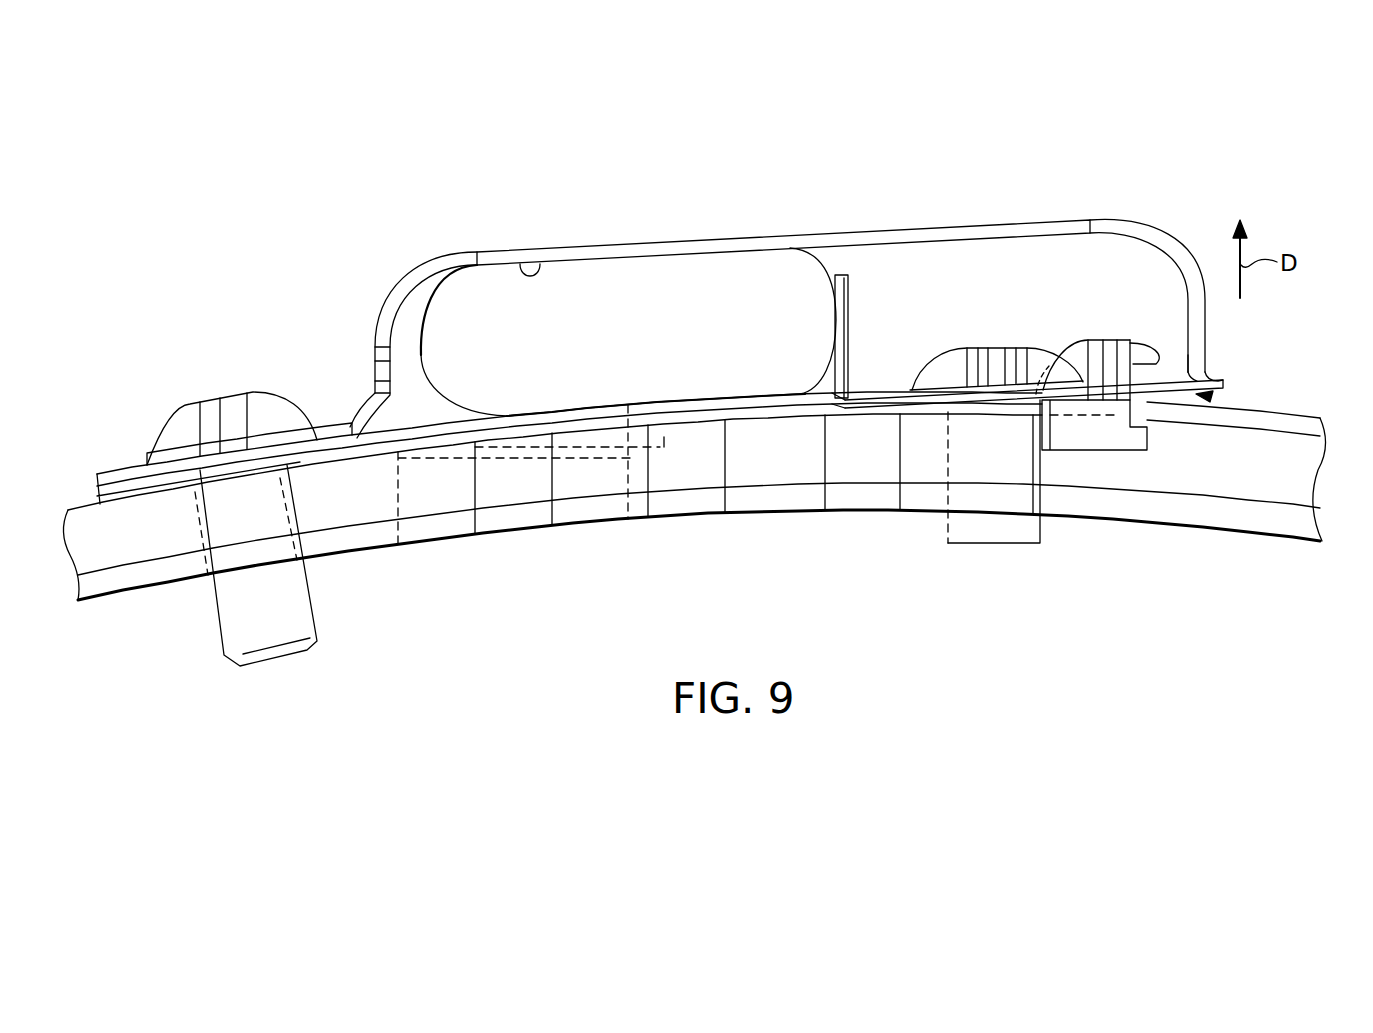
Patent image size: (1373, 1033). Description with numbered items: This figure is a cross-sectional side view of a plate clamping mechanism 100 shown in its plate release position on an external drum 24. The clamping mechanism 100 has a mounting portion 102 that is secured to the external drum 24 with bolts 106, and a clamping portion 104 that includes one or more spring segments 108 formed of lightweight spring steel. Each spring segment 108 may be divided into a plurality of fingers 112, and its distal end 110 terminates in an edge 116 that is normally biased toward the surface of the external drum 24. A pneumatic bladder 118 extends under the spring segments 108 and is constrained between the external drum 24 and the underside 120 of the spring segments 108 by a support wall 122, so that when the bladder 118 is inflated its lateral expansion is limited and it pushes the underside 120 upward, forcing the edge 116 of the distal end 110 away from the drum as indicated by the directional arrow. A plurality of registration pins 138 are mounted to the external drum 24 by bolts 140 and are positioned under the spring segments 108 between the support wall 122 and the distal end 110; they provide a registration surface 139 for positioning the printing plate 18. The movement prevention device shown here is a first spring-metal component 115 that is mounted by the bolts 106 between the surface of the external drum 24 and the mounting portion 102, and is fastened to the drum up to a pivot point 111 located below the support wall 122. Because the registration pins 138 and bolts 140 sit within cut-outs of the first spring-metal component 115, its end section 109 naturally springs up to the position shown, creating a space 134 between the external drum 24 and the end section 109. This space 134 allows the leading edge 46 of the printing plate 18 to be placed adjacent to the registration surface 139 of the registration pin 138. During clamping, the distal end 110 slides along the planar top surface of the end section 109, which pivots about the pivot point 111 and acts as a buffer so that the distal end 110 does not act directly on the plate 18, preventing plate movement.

The printing plate 18 is at (1308, 428).
The external drum 24 is at (76, 505).
The leading edge 46 is at (1140, 410).
The clamping mechanism 100 is at (446, 157).
The mounting portion 102 is at (113, 468).
The clamping portion 104 is at (698, 155).
The bolts 106 is at (181, 402).
The spring segment 108 is at (944, 220).
The end section 109 is at (1216, 377).
The distal end 110 is at (1207, 340).
The pivot point 111 is at (838, 410).
The fingers 112 is at (803, 238).
The first spring-metal component 115 is at (743, 432).
The edge 116 is at (1222, 391).
The pneumatic bladder 118 is at (585, 275).
The underside 120 is at (528, 265).
The support wall 122 is at (850, 298).
The space 134 is at (1182, 362).
The registration pins 138 is at (1097, 340).
The registration surface 139 is at (1157, 323).
The bolts 140 is at (948, 358).